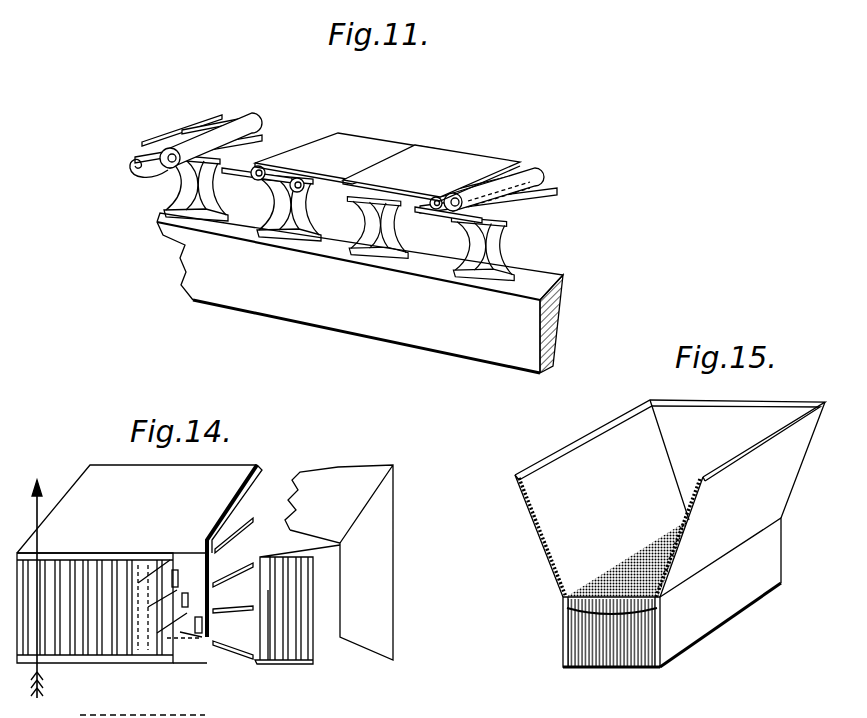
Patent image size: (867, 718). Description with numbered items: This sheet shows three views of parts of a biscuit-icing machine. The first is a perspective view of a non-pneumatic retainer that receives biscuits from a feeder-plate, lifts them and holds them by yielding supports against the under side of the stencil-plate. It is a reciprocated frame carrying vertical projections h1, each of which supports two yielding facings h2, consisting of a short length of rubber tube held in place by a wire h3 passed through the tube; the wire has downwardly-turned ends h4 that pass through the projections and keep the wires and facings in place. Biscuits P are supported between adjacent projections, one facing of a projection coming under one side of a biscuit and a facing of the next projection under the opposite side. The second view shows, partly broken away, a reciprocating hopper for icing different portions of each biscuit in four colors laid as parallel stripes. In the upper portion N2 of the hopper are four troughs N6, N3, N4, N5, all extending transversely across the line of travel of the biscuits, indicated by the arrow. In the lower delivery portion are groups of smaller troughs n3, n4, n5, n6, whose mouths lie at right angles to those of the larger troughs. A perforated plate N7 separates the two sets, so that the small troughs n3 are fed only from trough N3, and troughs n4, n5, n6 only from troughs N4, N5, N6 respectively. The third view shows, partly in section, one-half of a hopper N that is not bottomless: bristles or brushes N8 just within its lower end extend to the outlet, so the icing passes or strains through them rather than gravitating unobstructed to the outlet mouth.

In FIG. 11, the biscuits P is at (412, 150).
In FIG. 11, the vertical projections h1 is at (302, 229).
In FIG. 11, the yielding facings h2 is at (538, 182).
In FIG. 11, the wire h3 is at (520, 200).
In FIG. 11, the downwardly-turned ends h4 is at (586, 200).
In FIG. 14, the upper portion of the hopper N2 is at (128, 560).
In FIG. 14, the trough N3 is at (222, 506).
In FIG. 14, the trough N4 is at (225, 547).
In FIG. 14, the trough N5 is at (215, 592).
In FIG. 14, the trough N6 is at (218, 622).
In FIG. 14, the perforated plate N7 is at (213, 645).
In FIG. 14, the small troughs n3 is at (92, 672).
In FIG. 14, the small troughs n4 is at (128, 672).
In FIG. 14, the small troughs n5 is at (113, 560).
In FIG. 14, the small troughs n6 is at (138, 560).
In FIG. 15, the reciprocating hopper N is at (675, 617).
In FIG. 15, the bristles or brushes N8 is at (633, 550).